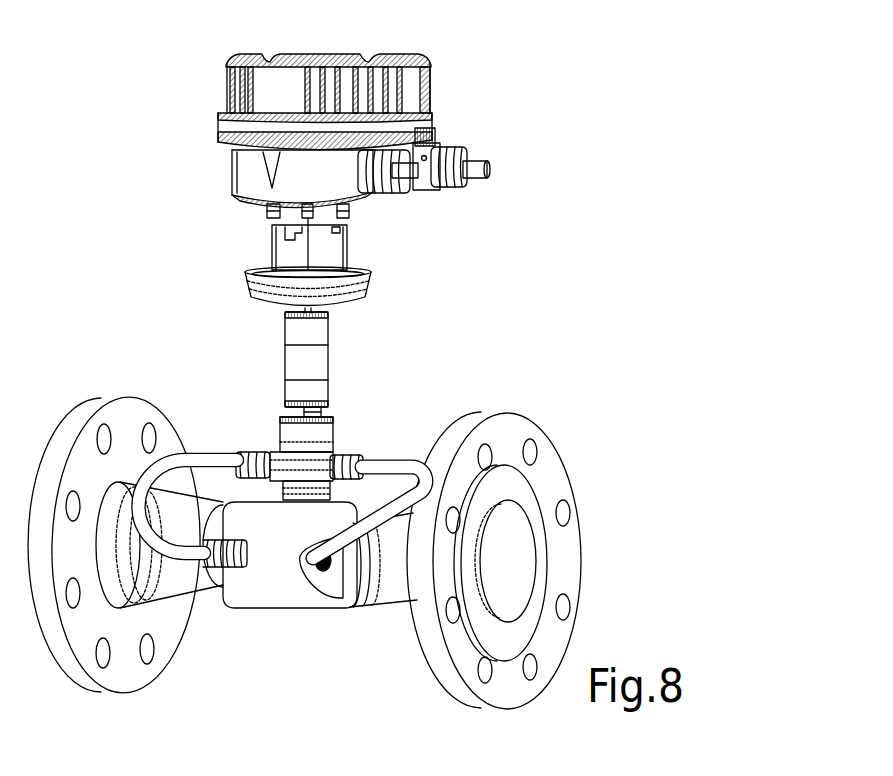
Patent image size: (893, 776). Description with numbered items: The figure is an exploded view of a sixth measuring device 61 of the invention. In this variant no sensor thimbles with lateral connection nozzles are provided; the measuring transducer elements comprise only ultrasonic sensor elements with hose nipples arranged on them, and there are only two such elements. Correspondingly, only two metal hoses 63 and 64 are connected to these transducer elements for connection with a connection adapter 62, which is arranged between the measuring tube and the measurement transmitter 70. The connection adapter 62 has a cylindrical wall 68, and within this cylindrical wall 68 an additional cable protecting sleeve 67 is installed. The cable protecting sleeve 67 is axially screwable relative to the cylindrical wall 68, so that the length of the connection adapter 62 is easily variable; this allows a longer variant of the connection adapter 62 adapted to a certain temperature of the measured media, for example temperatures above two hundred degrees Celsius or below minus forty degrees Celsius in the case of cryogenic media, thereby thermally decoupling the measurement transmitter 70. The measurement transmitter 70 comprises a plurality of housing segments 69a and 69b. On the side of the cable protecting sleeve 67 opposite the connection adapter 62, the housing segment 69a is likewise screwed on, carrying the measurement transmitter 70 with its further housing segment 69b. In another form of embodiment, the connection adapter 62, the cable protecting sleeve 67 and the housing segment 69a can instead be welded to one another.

The measuring device 61 is at (569, 207).
The connection adapter 62 is at (290, 432).
The metal hose 63 is at (400, 446).
The metal hose 64 is at (205, 466).
The cable protecting sleeve 67 is at (320, 357).
The cylindrical wall 68 is at (321, 413).
The housing segment 69a is at (245, 277).
The housing segment 69b is at (223, 148).
The measurement transmitter 70 is at (184, 172).